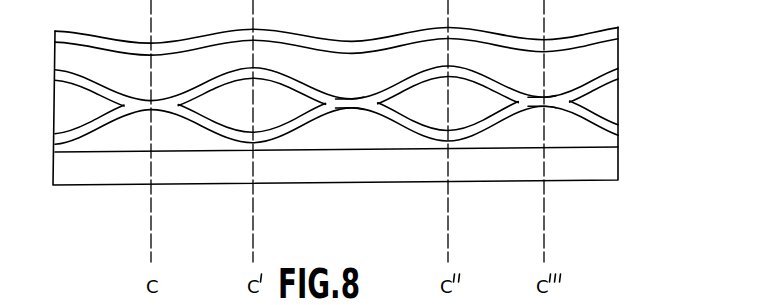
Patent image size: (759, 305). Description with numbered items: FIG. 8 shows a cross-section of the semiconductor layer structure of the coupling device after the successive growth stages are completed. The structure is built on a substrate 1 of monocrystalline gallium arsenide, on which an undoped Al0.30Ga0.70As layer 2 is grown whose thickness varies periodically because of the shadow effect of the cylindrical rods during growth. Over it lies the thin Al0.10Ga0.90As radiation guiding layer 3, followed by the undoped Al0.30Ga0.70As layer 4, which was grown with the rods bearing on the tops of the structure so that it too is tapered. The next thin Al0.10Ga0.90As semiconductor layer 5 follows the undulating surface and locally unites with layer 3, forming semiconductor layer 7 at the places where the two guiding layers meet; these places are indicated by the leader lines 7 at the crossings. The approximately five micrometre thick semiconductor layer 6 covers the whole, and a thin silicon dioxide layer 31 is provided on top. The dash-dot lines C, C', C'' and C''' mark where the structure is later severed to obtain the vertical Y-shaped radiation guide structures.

The substrate 1 is at (606, 165).
The layer 2 is at (600, 142).
The layer 3 is at (610, 131).
The layer 4 is at (607, 99).
The semiconductor layer 5 is at (612, 76).
The semiconductor layer 6 is at (601, 53).
The layer 31 is at (600, 34).
The semiconductor layer 7 is at (352, 108).